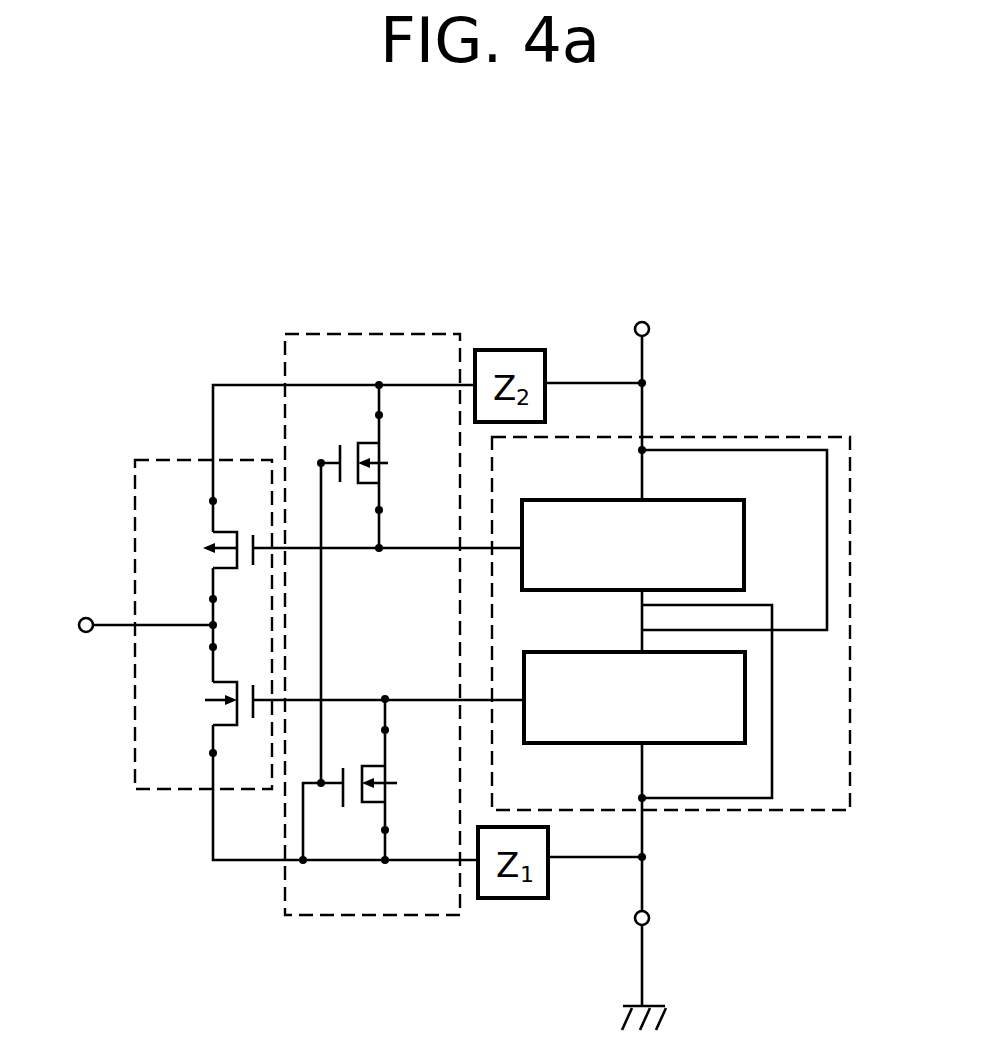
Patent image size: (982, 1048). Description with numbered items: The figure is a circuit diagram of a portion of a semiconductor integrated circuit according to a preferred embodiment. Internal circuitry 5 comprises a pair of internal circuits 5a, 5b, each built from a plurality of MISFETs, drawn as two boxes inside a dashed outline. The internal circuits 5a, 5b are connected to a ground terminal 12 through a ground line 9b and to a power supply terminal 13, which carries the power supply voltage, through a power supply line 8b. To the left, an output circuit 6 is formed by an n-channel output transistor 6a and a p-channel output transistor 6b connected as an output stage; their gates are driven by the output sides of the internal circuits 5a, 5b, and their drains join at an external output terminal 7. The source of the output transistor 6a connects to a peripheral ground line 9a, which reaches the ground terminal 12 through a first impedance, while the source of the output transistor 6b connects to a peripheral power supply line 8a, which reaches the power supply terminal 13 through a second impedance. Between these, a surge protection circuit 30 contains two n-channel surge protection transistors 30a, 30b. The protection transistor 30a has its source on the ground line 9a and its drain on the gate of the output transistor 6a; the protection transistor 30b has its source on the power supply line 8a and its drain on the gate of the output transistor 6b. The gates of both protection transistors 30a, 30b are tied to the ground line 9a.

The internal circuitry 5 is at (805, 435).
The internal circuit 5a is at (560, 651).
The internal circuit 5b is at (700, 500).
The output circuit 6 is at (133, 492).
The first output MISFET 6a is at (212, 717).
The second output MISFET 6b is at (212, 567).
The external output terminal 7 is at (86, 617).
The peripheral power supply line 8a is at (210, 397).
The power supply line 8b is at (645, 405).
The peripheral ground line 9a is at (212, 842).
The ground line 9b is at (646, 840).
The ground terminal 12 is at (652, 915).
The power supply terminal 13 is at (650, 330).
The surge protection circuit 30 is at (405, 332).
The surge protection transistor 30a is at (376, 770).
The surge protection transistor 30b is at (368, 447).